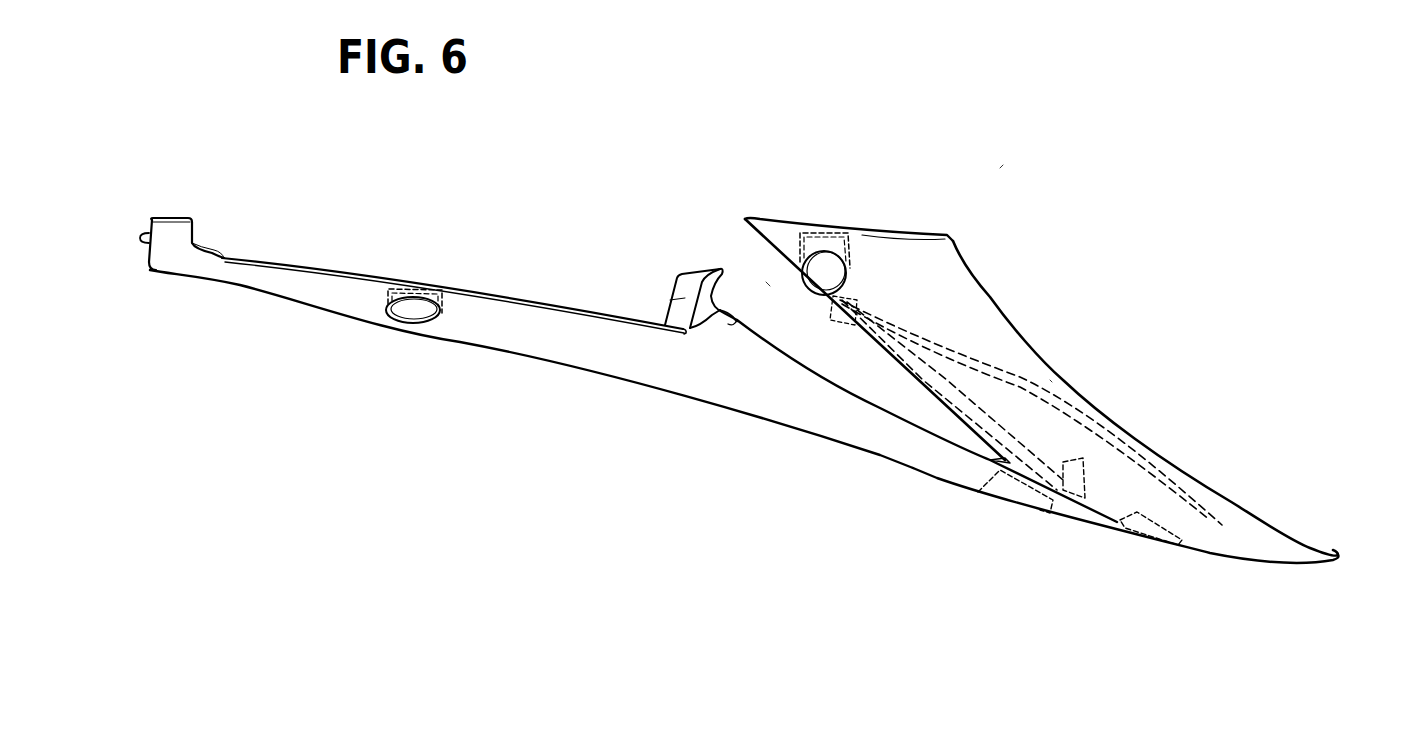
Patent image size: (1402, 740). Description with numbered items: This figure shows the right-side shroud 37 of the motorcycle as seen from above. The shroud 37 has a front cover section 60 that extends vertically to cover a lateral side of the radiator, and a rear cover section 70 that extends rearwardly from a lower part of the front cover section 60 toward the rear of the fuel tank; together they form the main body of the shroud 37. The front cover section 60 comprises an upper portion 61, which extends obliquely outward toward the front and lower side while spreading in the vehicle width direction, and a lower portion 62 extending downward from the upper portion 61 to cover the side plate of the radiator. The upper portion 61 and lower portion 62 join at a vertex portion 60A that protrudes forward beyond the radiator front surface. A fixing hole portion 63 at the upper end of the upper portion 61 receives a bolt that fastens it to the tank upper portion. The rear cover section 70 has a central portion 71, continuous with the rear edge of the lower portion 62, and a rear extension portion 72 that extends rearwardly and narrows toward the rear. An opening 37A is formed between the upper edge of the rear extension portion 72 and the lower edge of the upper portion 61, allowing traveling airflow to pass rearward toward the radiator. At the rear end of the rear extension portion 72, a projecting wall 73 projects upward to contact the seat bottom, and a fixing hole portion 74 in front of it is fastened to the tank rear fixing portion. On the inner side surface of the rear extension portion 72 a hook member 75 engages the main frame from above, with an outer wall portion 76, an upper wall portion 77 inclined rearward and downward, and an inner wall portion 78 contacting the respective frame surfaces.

The shroud 37 is at (1000, 168).
The opening 37A is at (818, 348).
The front cover section 60 is at (1152, 450).
The vertex portion 60A is at (1325, 563).
The upper portion 61 is at (980, 325).
The lower portion 62 is at (1193, 548).
The fixing hole portion 63 is at (828, 268).
The rear cover section 70 is at (553, 297).
The central portion 71 is at (943, 472).
The rear extension portion 72 is at (576, 352).
The projecting wall 73 is at (177, 217).
The fixing hole portion 74 is at (413, 313).
The hook member 75 is at (666, 290).
The outer wall portion 76 is at (734, 316).
The upper wall portion 77 is at (677, 311).
The inner wall portion 78 is at (717, 270).